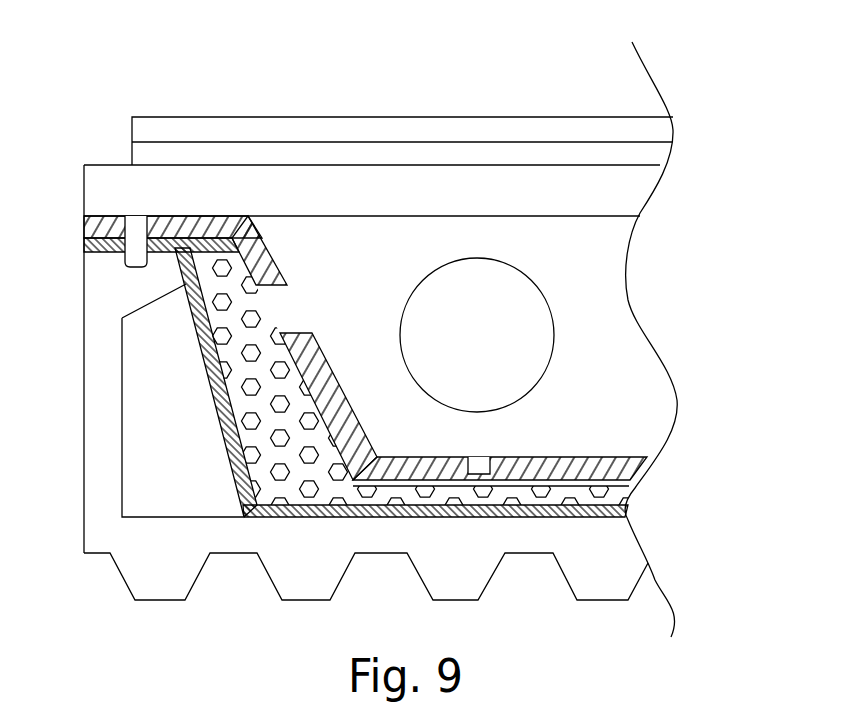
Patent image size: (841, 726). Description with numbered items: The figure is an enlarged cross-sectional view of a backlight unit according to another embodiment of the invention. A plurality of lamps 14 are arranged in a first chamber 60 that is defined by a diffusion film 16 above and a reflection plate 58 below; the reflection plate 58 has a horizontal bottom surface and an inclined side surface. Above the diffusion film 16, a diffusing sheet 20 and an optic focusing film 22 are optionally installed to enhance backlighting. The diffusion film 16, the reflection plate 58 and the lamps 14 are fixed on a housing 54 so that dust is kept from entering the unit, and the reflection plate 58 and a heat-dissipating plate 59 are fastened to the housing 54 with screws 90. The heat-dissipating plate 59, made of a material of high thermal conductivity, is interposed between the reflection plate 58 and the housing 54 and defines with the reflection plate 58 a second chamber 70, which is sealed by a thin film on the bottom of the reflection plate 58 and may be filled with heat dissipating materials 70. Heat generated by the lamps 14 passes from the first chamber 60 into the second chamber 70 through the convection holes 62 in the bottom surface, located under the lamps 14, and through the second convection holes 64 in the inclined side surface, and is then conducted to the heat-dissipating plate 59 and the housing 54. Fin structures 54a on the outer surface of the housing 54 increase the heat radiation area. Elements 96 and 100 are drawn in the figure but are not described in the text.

The lamps 14 is at (477, 335).
The diffusion film 16 is at (540, 187).
The diffusing sheet 20 is at (400, 152).
The optic focusing film 22 is at (200, 130).
The housing 54 is at (102, 415).
The fin structures 54a is at (307, 586).
The reflection plate 58 is at (612, 457).
The heat-dissipating plate 59 is at (590, 518).
The first chamber 60 is at (400, 272).
The convection holes 62 is at (479, 474).
The second convection holes 64 is at (312, 330).
The second chamber 70 is at (300, 432).
The screws 90 is at (130, 206).
The intermediate layer 96 is at (630, 488).
The sloped strip 100 is at (202, 356).